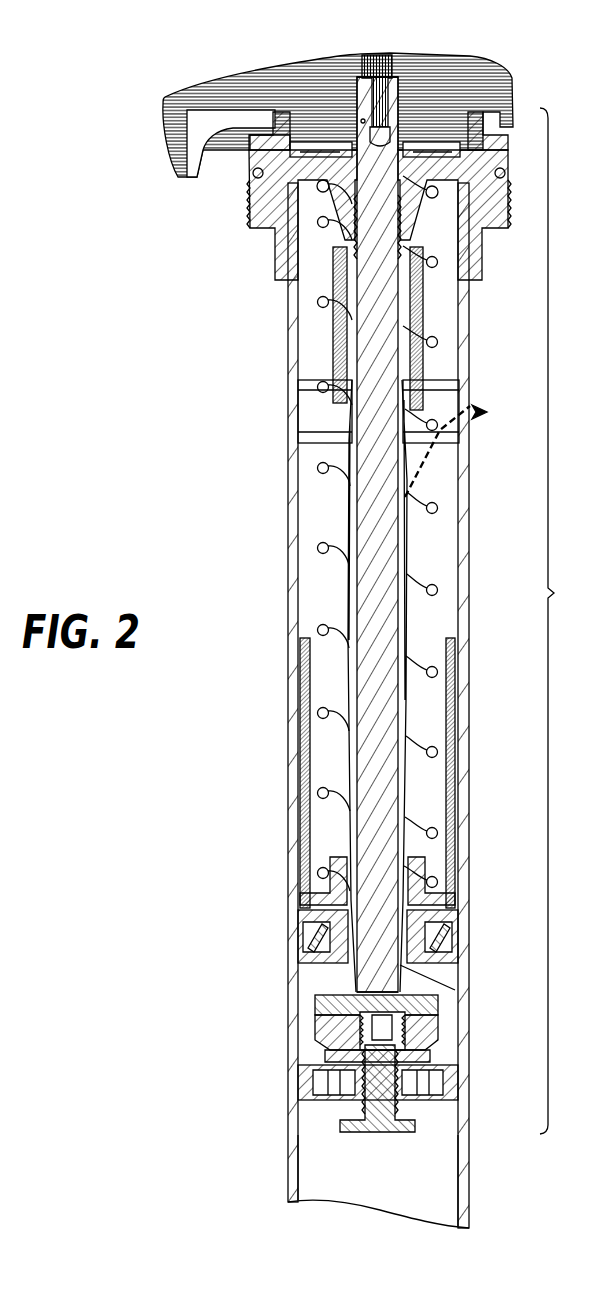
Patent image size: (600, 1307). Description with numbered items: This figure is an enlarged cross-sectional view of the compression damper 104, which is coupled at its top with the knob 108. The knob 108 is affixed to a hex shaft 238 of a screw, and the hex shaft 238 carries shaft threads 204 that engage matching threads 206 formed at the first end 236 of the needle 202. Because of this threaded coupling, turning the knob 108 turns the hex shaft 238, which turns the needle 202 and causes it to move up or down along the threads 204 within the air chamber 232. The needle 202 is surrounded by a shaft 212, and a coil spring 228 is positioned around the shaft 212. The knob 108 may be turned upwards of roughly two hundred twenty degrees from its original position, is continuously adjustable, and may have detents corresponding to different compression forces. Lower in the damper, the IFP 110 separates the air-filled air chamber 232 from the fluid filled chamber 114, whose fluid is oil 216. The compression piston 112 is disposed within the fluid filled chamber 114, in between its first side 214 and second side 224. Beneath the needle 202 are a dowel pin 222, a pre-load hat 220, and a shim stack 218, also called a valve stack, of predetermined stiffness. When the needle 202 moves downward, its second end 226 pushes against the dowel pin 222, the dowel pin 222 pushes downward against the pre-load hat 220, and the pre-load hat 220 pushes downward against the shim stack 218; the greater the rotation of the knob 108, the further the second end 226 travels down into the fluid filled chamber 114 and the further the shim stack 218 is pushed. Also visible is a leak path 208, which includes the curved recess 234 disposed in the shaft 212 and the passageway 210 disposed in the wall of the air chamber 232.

The compression damper 104 is at (567, 621).
The knob 108 is at (516, 113).
The IFP 110 is at (472, 912).
The compression piston 112 is at (278, 1062).
The fluid filled chamber 114 is at (430, 1218).
The needle 202 is at (380, 270).
The shaft threads 204 is at (368, 120).
The matching threads 206 is at (395, 105).
The leak path 208 is at (437, 443).
The passageway 210 is at (464, 410).
The shaft 212 is at (406, 596).
The first side 214 is at (433, 1108).
The oil 216 is at (434, 1170).
The shim stack 218 is at (322, 1055).
The pre-load hat 220 is at (316, 1025).
The dowel pin 222 is at (340, 996).
The second side 224 is at (436, 968).
The second end 226 is at (385, 980).
The coil spring 228 is at (309, 800).
The air chamber 232 is at (316, 522).
The curved recess 234 is at (348, 462).
The first end 236 is at (361, 119).
The hex shaft 238 is at (380, 55).